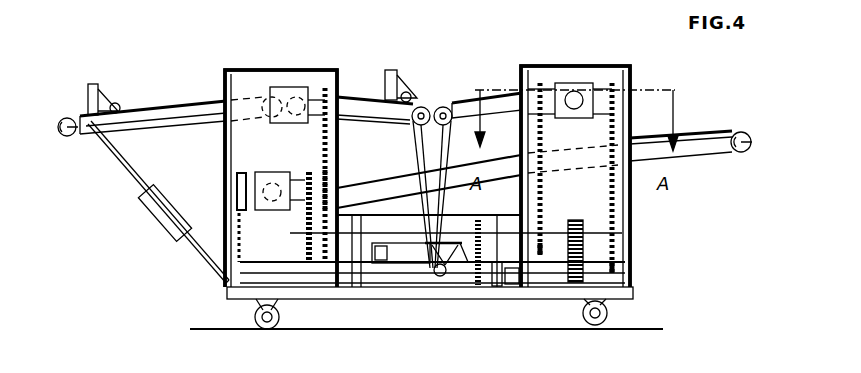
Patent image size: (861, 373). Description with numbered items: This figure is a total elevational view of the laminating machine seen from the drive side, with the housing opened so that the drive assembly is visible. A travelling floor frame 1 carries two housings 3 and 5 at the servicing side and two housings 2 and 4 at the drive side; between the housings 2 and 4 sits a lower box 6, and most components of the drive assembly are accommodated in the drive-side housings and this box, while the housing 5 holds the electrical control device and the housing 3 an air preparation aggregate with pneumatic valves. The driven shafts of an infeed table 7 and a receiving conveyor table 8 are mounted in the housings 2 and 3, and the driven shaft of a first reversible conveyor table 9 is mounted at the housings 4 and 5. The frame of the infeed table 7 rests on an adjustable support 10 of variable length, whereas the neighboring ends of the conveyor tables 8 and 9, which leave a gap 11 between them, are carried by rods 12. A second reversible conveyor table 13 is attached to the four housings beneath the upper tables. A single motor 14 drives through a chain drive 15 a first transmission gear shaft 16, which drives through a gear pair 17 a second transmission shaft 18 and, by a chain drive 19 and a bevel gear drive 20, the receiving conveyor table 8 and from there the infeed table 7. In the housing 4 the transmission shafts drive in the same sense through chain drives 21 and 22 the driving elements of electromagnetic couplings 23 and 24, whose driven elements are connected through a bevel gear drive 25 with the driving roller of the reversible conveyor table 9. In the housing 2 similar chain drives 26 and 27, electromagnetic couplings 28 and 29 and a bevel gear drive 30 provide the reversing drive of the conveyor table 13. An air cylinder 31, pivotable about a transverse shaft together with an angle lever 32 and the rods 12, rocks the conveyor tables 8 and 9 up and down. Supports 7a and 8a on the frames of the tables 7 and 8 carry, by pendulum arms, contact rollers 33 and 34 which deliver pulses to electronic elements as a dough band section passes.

The travelling floor frame 1 is at (300, 292).
The housing 2 is at (249, 70).
The housing 3 is at (281, 178).
The housing 4 is at (631, 67).
The housing 5 is at (575, 176).
The box 6 is at (360, 243).
The infeed table 7 is at (163, 106).
The support 7a is at (86, 100).
The receiving conveyor table 8 is at (352, 99).
The support 8a is at (388, 96).
The first reversible conveyor table 9 is at (464, 100).
The adjustable support 10 is at (162, 210).
The gap 11 is at (436, 106).
The rods 12 is at (428, 156).
The second reversible conveyor table 13 is at (695, 136).
The motor 14 is at (512, 276).
The chain drive 15 is at (500, 264).
The first transmission gear shaft 16 is at (352, 243).
The gear pair 17 is at (570, 291).
The second transmission shaft 18 is at (413, 266).
The chain drive 19 is at (328, 153).
The bevel gear drive 20 is at (297, 98).
The chain drive 21 is at (545, 188).
The chain drive 22 is at (615, 202).
The electromagnetic coupling 23 is at (546, 84).
The electromagnetic coupling 24 is at (606, 85).
The bevel gear drive 25 is at (575, 97).
The chain drive 26 is at (306, 222).
The chain drive 27 is at (232, 238).
The electromagnetic coupling 28 is at (240, 178).
The electromagnetic coupling 29 is at (302, 180).
The bevel gear drive 30 is at (272, 190).
The air cylinder 31 is at (398, 252).
The angle lever 32 is at (463, 268).
The contact roller 33 is at (112, 100).
The contact roller 34 is at (408, 94).